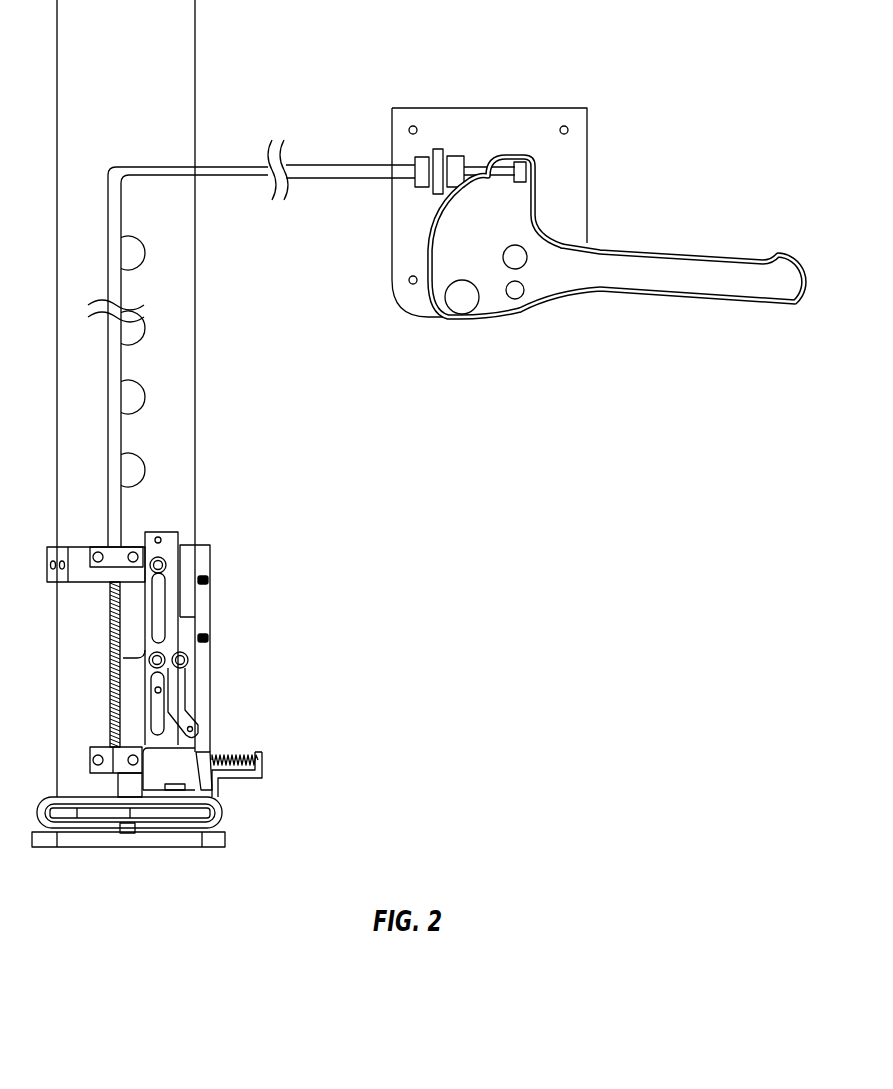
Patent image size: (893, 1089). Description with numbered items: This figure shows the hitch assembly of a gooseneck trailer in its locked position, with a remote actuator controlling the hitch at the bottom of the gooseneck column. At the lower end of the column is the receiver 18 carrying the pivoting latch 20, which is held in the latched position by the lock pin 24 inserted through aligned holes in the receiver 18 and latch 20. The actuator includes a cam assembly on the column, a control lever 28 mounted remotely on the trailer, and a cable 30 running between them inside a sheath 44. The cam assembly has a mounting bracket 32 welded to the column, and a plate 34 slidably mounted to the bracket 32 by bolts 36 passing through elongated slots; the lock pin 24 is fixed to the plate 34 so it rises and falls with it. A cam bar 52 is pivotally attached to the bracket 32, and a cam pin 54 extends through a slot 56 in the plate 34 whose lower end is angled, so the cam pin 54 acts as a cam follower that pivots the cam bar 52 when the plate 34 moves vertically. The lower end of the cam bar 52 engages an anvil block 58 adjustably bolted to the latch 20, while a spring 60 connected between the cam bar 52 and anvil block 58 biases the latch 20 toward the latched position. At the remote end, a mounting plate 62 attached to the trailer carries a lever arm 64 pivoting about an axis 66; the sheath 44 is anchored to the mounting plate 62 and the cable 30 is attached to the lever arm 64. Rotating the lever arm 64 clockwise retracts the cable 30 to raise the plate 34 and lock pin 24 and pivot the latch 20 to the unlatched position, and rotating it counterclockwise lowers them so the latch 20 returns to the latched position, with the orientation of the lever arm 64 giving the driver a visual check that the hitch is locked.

The receiver 18 is at (214, 843).
The latch 20 is at (203, 815).
The lock pin 24 is at (127, 831).
The control lever 28 is at (617, 264).
The cable 30 is at (228, 168).
The mounting bracket 32 is at (203, 556).
The plate 34 is at (177, 535).
The bolts 36 is at (167, 565).
The sheath 44 is at (327, 167).
The cam bar 52 is at (208, 735).
The cam pin 54 is at (188, 659).
The slot 56 is at (177, 694).
The anvil block 58 is at (214, 783).
The spring 60 is at (248, 756).
The mounting plate 62 is at (493, 118).
The lever arm 64 is at (688, 267).
The axis 66 is at (514, 258).